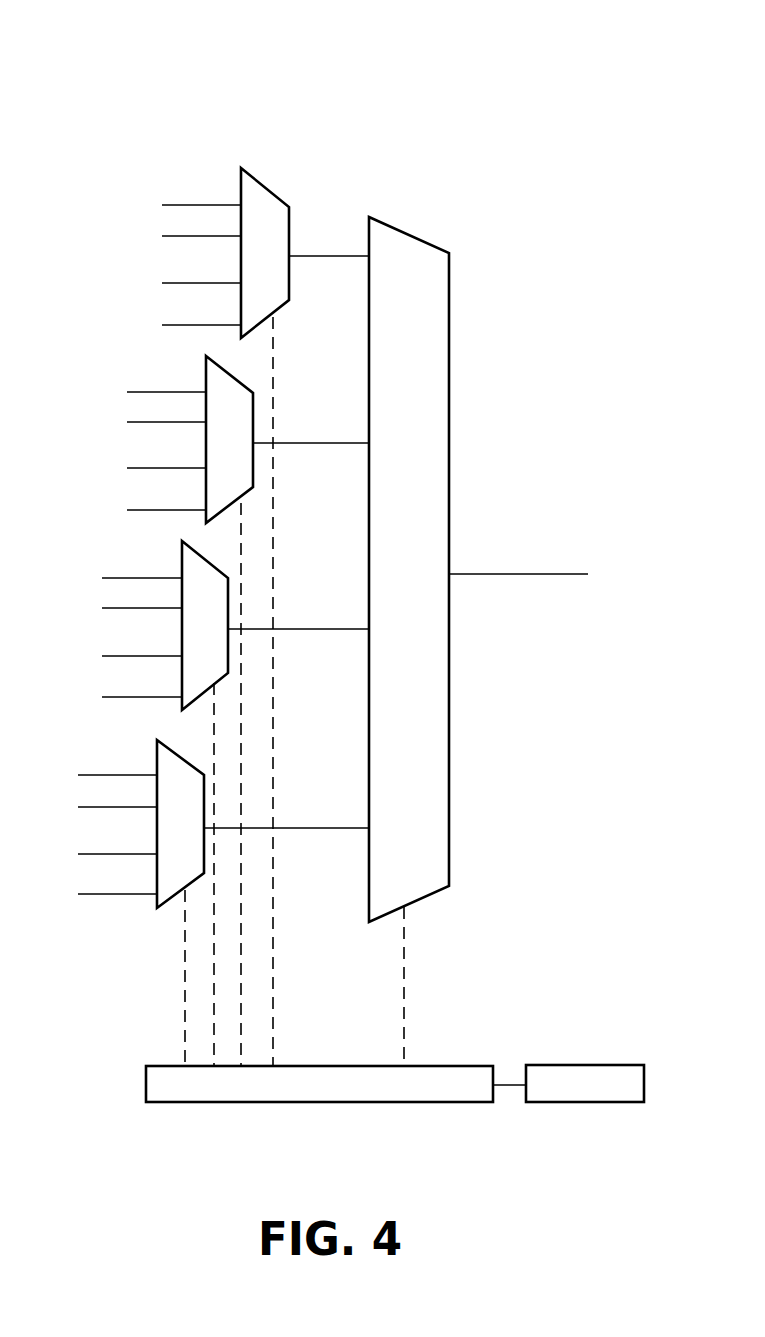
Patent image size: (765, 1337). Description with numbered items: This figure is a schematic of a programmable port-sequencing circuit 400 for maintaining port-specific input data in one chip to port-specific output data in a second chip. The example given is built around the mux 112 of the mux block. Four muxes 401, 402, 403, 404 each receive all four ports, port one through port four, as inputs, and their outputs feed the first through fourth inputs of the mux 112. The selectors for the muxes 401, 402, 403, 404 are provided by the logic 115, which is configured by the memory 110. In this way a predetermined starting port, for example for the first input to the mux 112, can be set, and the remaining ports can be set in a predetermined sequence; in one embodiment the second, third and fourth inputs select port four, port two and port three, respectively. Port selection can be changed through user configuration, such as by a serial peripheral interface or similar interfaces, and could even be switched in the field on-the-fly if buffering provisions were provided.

The programmable port-sequencing circuit 400 is at (682, 42).
The mux 401 is at (286, 250).
The mux 402 is at (251, 455).
The mux 403 is at (229, 631).
The mux 404 is at (203, 835).
The mux 112 is at (428, 385).
The logic 115 is at (189, 1093).
The memory 110 is at (578, 1095).